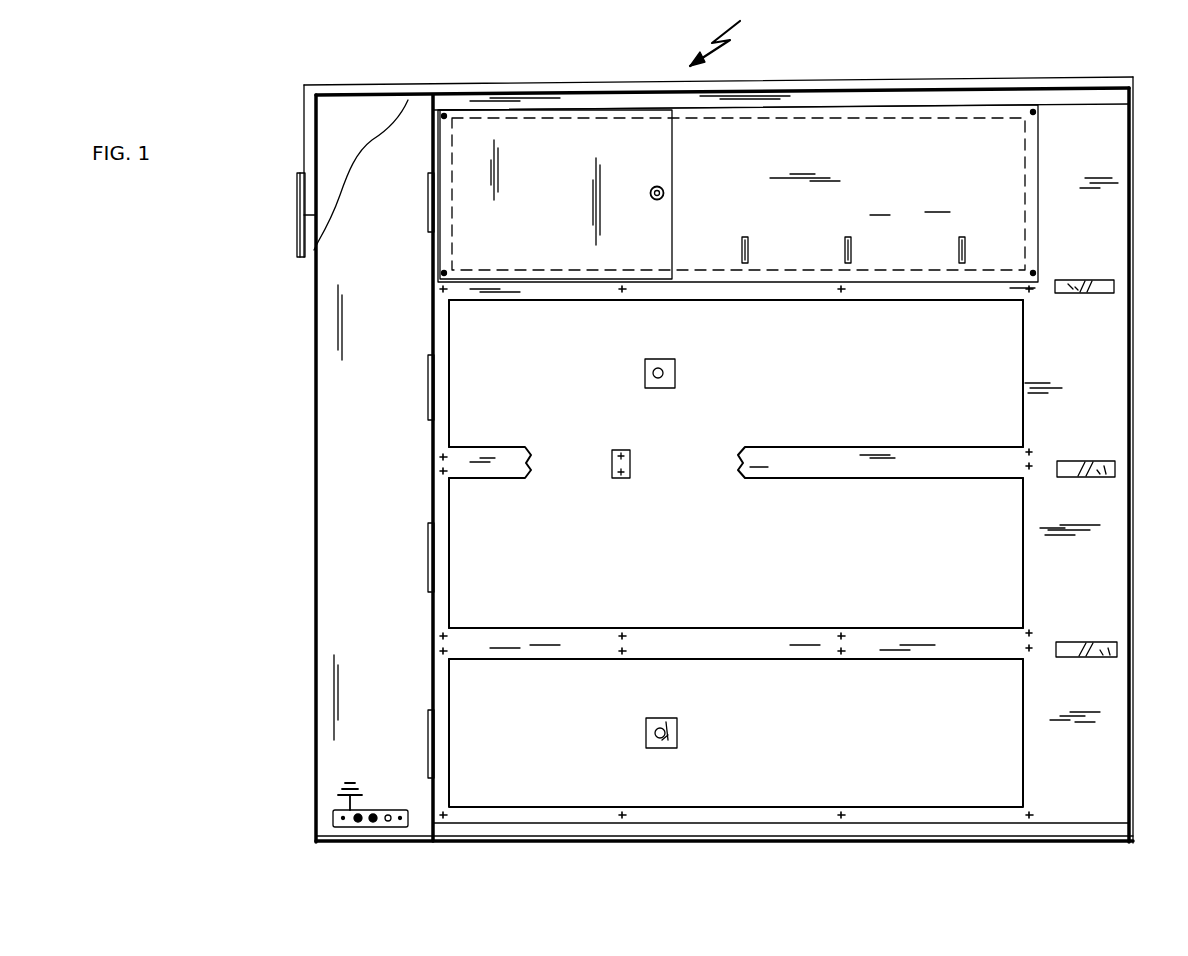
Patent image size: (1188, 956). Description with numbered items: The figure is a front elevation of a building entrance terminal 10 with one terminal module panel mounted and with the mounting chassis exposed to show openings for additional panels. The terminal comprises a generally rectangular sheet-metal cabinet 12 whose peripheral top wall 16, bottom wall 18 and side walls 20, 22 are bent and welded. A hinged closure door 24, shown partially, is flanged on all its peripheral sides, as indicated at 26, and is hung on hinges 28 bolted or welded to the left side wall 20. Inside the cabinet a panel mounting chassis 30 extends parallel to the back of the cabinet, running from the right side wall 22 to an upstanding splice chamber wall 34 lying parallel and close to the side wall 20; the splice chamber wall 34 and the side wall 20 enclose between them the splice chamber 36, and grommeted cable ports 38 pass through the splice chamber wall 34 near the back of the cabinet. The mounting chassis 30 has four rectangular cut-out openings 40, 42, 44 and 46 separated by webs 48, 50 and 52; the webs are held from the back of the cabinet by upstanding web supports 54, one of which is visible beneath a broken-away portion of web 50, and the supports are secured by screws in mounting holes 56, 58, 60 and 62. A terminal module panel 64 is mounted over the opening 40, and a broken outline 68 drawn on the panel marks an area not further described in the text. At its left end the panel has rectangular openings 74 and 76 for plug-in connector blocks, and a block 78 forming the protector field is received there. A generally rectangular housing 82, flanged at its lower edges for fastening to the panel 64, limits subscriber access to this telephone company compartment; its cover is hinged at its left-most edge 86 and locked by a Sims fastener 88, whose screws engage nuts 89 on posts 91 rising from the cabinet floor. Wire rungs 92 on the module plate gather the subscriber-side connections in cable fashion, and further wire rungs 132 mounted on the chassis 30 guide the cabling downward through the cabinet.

The building entrance terminal 10 is at (730, 37).
The cabinet 12 is at (903, 88).
The top wall 16 is at (552, 104).
The bottom wall 18 is at (860, 846).
The side wall 20 is at (316, 652).
The side wall 22 is at (1135, 407).
The hinged closure door 24 is at (357, 129).
The flange 26 is at (368, 93).
The hinge 28 is at (297, 212).
The panel mounting chassis 30 is at (1096, 361).
The splice chamber wall 34 is at (433, 285).
The splice chamber 36 is at (377, 579).
The grommeted cable port 38 is at (428, 186).
The cut out opening 40 is at (1022, 172).
The cut out opening 42 is at (1023, 358).
The cut out opening 44 is at (1023, 544).
The cut out opening 46 is at (1023, 728).
The web 48 is at (626, 300).
The web 50 is at (497, 447).
The web 52 is at (488, 630).
The web support 54 is at (631, 462).
The mounting hole 56 is at (448, 458).
The mounting hole 58 is at (614, 478).
The mounting hole 60 is at (840, 452).
The mounting hole 62 is at (1026, 448).
The terminal module panel 64 is at (737, 168).
The mounting outline 68 is at (884, 122).
The rectangular opening 74 is at (662, 718).
The rectangular opening 76 is at (1068, 282).
The connector block 78 is at (1127, 530).
The housing 82 is at (672, 222).
The hinged edge 86 is at (443, 252).
The Sims fastener 88 is at (652, 200).
The nut 89 is at (645, 364).
The post 91 is at (655, 388).
The wire rung 92 is at (748, 252).
The wire rung 132 is at (1092, 280).